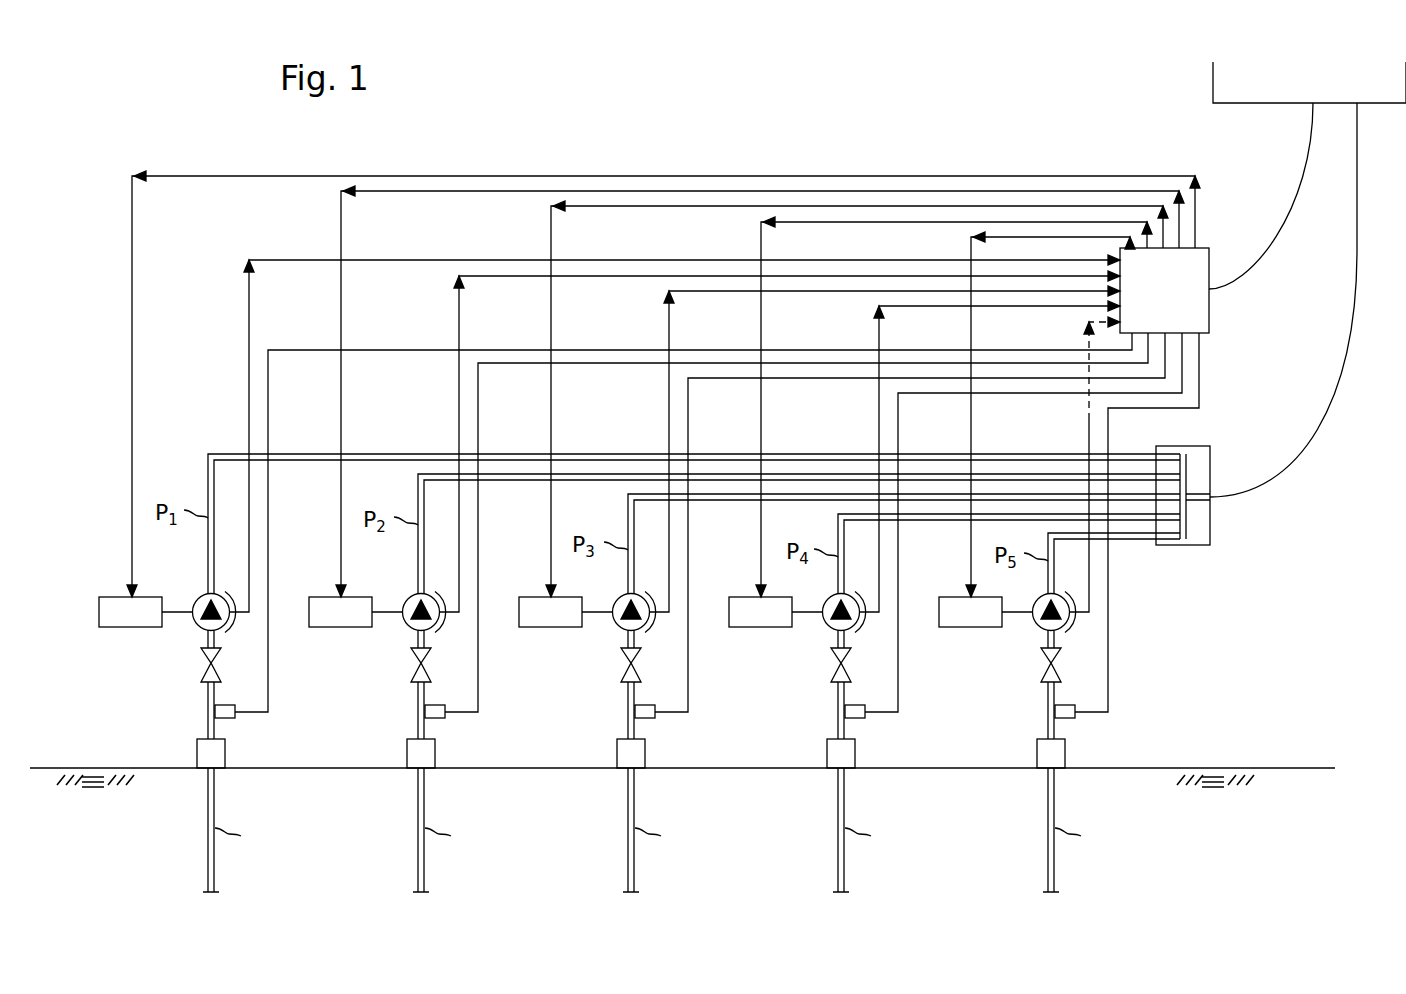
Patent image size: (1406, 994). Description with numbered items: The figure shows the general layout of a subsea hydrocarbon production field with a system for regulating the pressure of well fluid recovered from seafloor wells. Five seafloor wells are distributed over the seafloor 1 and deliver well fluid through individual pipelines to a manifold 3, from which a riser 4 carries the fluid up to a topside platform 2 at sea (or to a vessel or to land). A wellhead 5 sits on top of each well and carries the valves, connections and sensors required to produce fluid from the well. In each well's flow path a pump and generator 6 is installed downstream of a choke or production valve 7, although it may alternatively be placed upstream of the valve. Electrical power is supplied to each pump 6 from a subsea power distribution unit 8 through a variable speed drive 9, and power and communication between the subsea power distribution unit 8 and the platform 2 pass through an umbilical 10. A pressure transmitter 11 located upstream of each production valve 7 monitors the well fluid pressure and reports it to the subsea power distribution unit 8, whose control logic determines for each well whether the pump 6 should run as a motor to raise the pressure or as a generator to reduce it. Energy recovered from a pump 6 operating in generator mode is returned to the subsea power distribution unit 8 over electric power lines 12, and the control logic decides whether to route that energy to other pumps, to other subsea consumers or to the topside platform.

The seafloor 1 is at (1286, 762).
The topside platform 2 is at (1313, 92).
The manifold 3 is at (1210, 526).
The riser 4 is at (1320, 392).
The wellhead 5 is at (176, 741).
The pump and generator 6 is at (199, 625).
The choke or production valve 7 is at (203, 666).
The subsea power distribution unit 8 is at (1209, 313).
The variable speed drive 9 is at (106, 597).
The umbilical 10 is at (1290, 229).
The pressure transmitter 11 is at (220, 705).
The electric power lines 12 is at (249, 324).